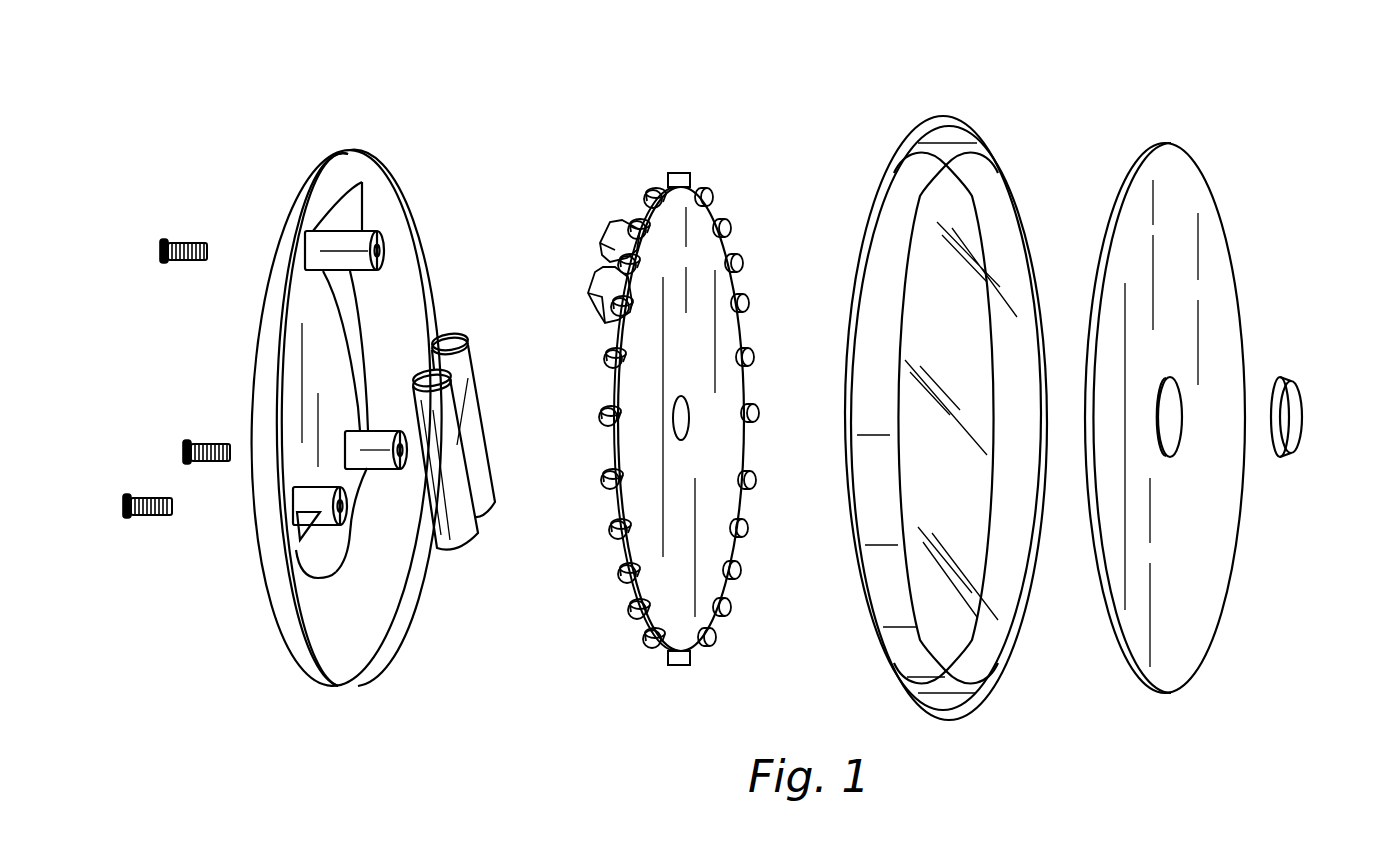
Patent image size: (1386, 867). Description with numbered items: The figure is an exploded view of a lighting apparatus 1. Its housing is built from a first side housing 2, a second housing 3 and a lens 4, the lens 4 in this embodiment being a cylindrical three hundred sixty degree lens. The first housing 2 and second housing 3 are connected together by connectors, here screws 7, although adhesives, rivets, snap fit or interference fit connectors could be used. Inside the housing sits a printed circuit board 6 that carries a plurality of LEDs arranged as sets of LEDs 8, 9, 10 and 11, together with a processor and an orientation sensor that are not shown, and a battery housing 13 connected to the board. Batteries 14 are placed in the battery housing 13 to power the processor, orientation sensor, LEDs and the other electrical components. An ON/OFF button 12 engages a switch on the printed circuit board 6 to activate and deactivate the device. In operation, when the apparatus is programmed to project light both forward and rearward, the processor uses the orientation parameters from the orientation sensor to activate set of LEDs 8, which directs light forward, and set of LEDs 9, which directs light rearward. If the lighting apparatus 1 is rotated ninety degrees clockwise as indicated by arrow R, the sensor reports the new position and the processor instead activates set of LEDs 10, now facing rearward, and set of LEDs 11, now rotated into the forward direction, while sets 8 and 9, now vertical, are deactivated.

The lighting apparatus 1 is at (258, 108).
The first side housing 2 is at (1212, 573).
The second housing 3 is at (360, 633).
The lens 4 is at (978, 650).
The printed circuit board 6 is at (682, 534).
The screws 7 is at (207, 440).
The set of LEDs 8 is at (590, 400).
The set of LEDs 9 is at (778, 283).
The set of LEDs 10 is at (722, 165).
The set of LEDs 11 is at (722, 672).
The ON/OFF button 12 is at (1293, 415).
The battery housing 13 is at (598, 283).
The batteries 14 is at (485, 435).
The arrow R is at (1244, 265).